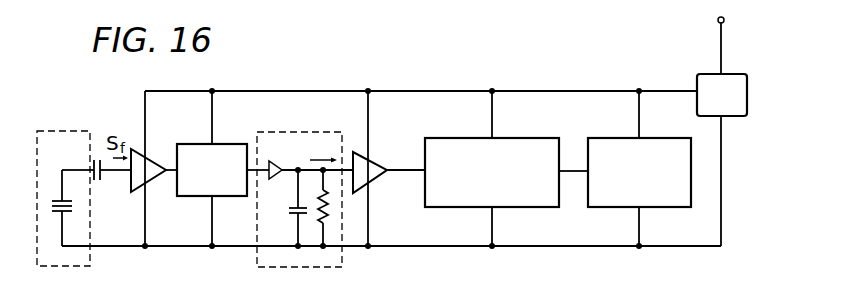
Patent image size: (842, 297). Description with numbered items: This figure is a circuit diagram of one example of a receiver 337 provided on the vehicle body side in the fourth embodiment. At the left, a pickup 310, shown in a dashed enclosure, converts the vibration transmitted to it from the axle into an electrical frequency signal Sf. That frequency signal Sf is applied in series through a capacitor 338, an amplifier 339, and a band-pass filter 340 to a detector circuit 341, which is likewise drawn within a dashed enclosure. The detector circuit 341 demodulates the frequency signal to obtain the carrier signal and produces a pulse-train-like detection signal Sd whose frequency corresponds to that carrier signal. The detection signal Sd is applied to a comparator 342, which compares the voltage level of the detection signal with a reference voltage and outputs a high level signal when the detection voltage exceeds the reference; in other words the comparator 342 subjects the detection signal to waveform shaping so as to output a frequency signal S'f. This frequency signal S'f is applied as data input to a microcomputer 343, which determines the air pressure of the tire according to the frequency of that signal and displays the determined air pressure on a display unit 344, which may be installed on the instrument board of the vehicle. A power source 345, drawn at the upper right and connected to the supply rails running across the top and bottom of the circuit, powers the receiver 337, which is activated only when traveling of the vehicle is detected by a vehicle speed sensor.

The pickup 310 is at (72, 130).
The receiver 337 is at (340, 62).
The capacitor 338 is at (106, 181).
The amplifier 339 is at (153, 157).
The band-pass filter 340 is at (239, 132).
The detector circuit 341 is at (325, 131).
The comparator 342 is at (373, 156).
The microcomputer 343 is at (538, 138).
The display unit 344 is at (668, 138).
The power source 345 is at (707, 73).